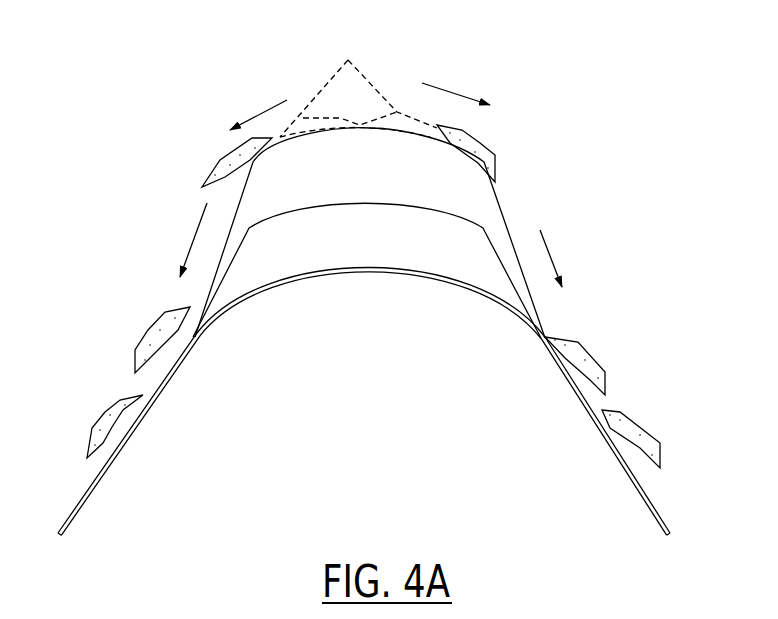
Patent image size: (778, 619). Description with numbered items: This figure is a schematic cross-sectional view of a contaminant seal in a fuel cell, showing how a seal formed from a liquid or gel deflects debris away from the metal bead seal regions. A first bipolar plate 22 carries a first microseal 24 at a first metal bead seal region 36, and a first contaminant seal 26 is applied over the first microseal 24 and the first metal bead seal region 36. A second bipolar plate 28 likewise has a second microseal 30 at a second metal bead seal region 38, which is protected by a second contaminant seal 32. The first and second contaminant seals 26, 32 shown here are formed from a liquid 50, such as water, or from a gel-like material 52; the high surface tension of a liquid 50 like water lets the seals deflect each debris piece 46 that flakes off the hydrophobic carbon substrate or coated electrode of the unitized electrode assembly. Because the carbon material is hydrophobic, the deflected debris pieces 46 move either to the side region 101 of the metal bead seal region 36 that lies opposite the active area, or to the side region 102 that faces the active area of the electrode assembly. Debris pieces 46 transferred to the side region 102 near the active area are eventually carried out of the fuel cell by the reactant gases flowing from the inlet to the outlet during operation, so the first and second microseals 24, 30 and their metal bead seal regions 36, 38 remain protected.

The first bipolar plate 22 is at (404, 403).
The second bipolar plate 28 is at (663, 513).
The first microseal 24 is at (405, 265).
The second microseal 30 is at (487, 258).
The first contaminant seal 26 is at (406, 233).
The second contaminant seal 32 is at (478, 200).
The second metal bead seal region 38 is at (366, 194).
The first metal bead seal region 36 is at (328, 232).
The liquid 50 is at (187, 222).
The gel-like material 52 is at (250, 212).
The debris piece 46 is at (348, 60).
The side region 101 is at (52, 427).
The side region 102 is at (693, 224).